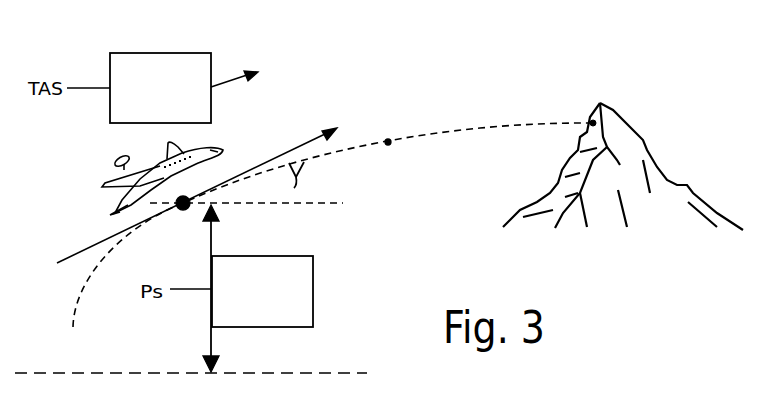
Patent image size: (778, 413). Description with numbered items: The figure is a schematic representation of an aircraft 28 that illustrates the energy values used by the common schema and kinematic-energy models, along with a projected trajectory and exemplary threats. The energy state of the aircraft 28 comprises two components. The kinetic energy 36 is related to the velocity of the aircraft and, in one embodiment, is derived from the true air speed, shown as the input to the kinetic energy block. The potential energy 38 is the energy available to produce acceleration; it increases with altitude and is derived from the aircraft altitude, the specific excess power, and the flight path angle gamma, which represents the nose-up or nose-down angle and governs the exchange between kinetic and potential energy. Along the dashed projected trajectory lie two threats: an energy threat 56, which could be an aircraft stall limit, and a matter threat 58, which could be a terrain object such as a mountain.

The aircraft 28 is at (155, 158).
The kinetic energy 36 is at (185, 53).
The potential energy 38 is at (288, 256).
The energy threat 56 is at (388, 140).
The matter threat 58 is at (592, 122).